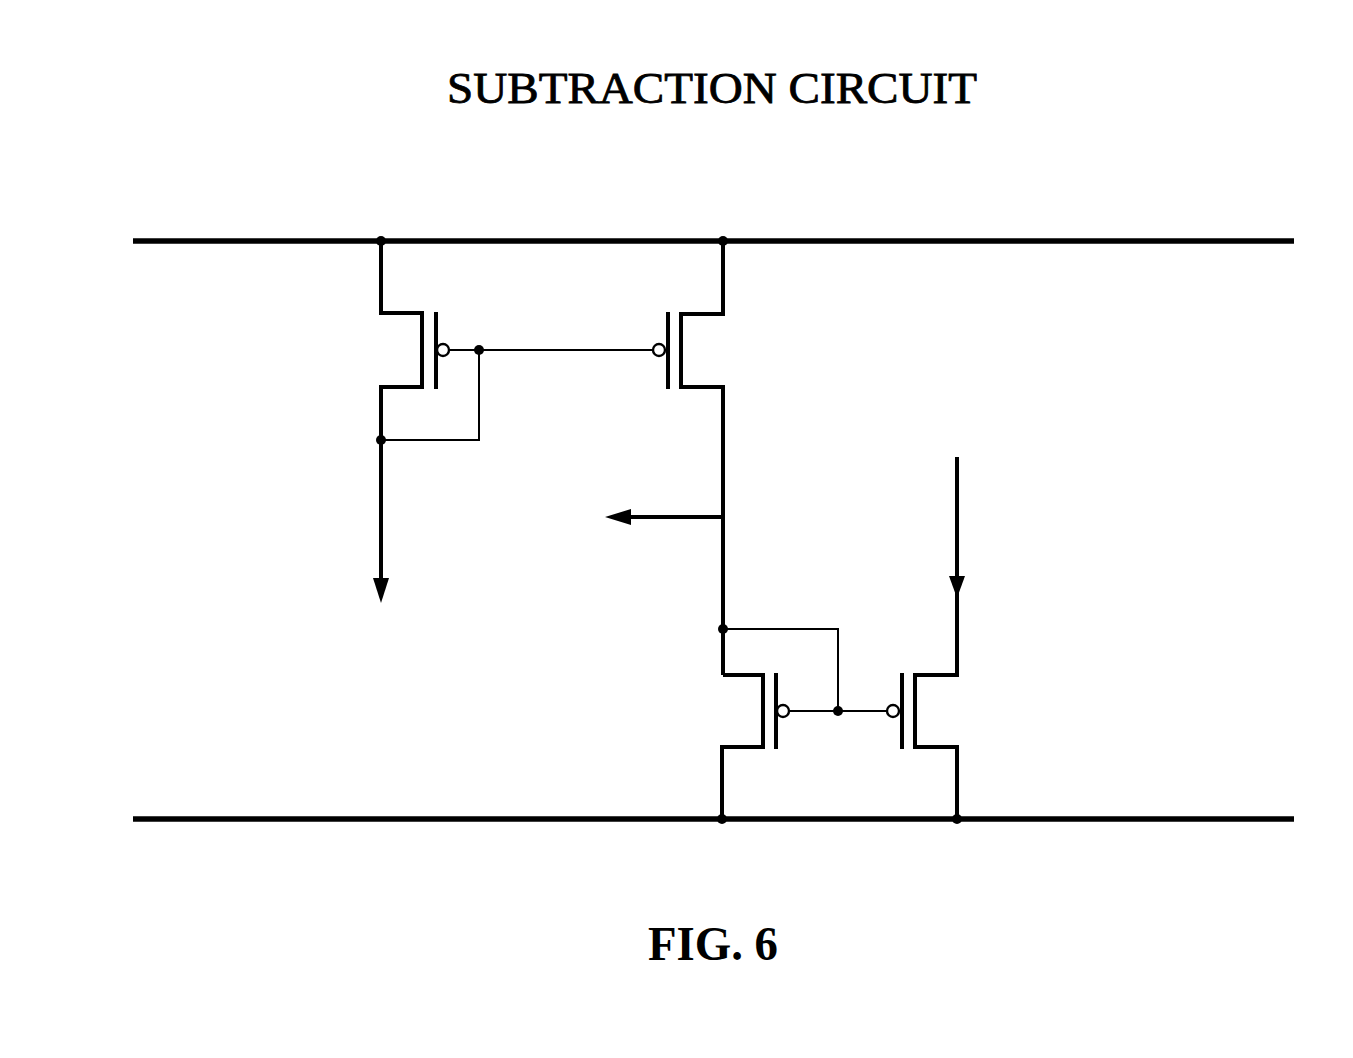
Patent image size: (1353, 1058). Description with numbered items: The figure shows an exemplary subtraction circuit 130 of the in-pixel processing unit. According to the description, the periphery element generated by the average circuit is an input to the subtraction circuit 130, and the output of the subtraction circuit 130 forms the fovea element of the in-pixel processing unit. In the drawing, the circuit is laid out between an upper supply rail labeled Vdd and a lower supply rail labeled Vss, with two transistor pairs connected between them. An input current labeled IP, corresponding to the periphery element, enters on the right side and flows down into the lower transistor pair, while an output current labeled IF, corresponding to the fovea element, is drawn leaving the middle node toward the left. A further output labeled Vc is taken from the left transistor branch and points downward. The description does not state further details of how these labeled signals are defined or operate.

The subtraction circuit 130 is at (165, 71).
The positive supply rail Vdd is at (713, 220).
The negative supply rail Vss is at (713, 798).
The control voltage output Vc is at (403, 424).
The output current I(F ij) IF is at (601, 458).
The input current I(P ij) IP is at (862, 611).